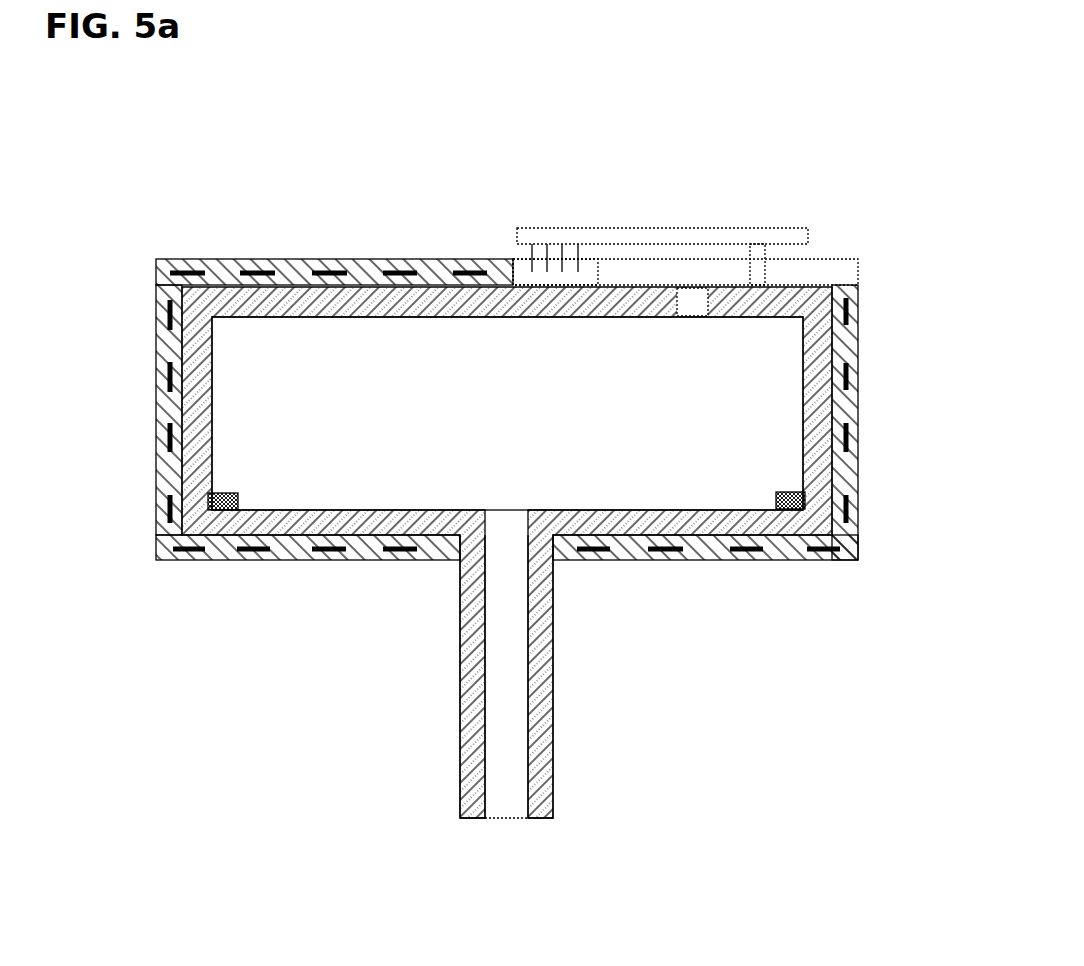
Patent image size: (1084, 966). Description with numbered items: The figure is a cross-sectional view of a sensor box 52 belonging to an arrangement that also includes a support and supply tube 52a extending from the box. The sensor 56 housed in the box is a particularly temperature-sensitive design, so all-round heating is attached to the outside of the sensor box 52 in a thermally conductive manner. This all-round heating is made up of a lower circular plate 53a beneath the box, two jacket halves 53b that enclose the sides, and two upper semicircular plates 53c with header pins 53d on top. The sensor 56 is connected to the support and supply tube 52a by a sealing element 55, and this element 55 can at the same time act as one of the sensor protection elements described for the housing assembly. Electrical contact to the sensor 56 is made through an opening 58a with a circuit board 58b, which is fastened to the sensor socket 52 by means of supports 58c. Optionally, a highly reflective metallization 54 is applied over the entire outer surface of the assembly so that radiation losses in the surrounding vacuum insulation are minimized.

The sensor box 52 is at (817, 348).
The support and supply tube 52a is at (540, 686).
The lower circular plate 53a is at (286, 549).
The jacket halves 53b is at (170, 409).
The upper semicircular plates 53c is at (295, 274).
The header pins 53d is at (546, 274).
The highly reflective metallization 54 is at (726, 562).
The sealing element 55 is at (793, 500).
The sensor 56 is at (755, 418).
The opening 58a is at (692, 304).
The circuit board 58b is at (688, 237).
The supports 58c is at (757, 268).